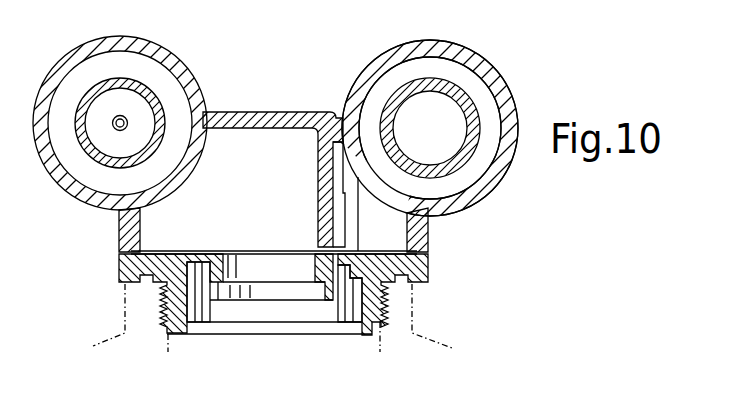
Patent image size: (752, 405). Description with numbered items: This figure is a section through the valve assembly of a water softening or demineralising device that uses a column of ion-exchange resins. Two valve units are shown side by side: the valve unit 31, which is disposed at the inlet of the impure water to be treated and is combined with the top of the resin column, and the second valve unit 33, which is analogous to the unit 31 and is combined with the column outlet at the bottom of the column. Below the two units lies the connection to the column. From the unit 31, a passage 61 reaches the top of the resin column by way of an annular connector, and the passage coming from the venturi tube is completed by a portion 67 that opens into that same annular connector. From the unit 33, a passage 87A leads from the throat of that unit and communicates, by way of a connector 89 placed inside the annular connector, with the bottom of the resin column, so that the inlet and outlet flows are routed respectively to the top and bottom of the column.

The second valve unit 33 is at (187, 68).
The valve unit 31 is at (360, 90).
The passage 87A is at (283, 170).
The portion 67 is at (337, 217).
The passage 61 is at (392, 240).
The connector 89 is at (247, 263).